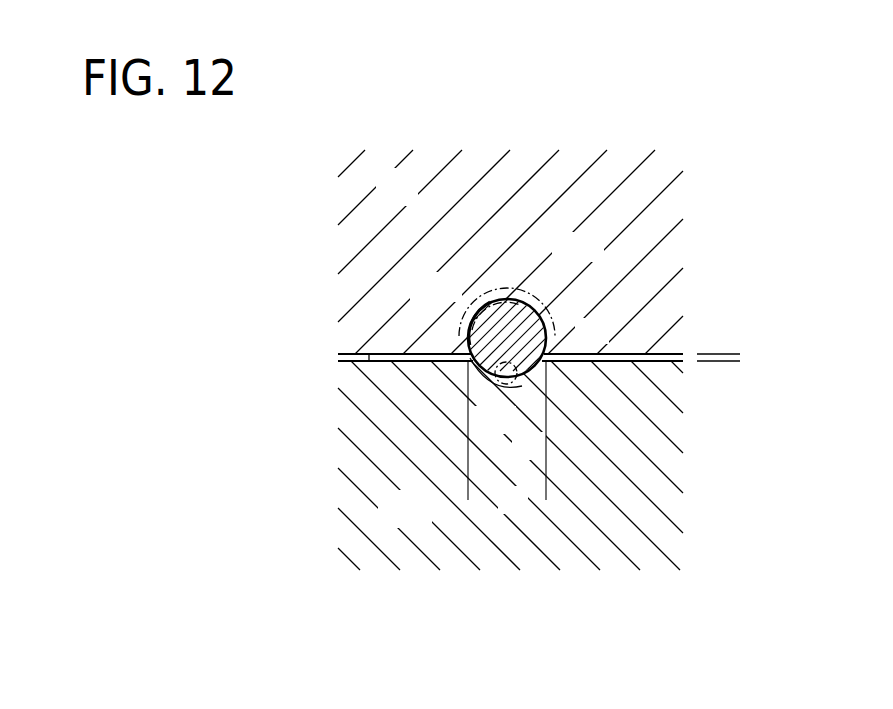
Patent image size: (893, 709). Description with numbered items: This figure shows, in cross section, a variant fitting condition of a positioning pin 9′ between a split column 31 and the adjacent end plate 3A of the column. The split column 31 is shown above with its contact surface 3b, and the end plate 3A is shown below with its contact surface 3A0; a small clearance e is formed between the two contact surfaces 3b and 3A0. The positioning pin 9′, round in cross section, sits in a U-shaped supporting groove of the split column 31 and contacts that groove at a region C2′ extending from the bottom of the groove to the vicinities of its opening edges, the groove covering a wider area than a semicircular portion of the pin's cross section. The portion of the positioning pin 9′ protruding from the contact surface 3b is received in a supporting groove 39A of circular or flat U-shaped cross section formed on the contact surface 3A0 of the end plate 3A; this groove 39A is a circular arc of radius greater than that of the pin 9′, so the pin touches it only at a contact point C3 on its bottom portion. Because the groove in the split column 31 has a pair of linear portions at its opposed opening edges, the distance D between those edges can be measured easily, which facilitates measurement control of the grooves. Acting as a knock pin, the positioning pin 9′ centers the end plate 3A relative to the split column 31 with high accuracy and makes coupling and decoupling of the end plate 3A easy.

The split column 31 is at (412, 201).
The end plate 3A is at (426, 523).
The contact surface 3b is at (369, 361).
The contact surface 3A0 is at (645, 354).
The positioning pin 9′ is at (547, 345).
The contact region C2′ is at (520, 290).
The supporting groove 39A is at (495, 372).
The contact point C3 is at (513, 382).
The distance of the opposed opening edges D is at (546, 483).
The clearance e is at (729, 322).